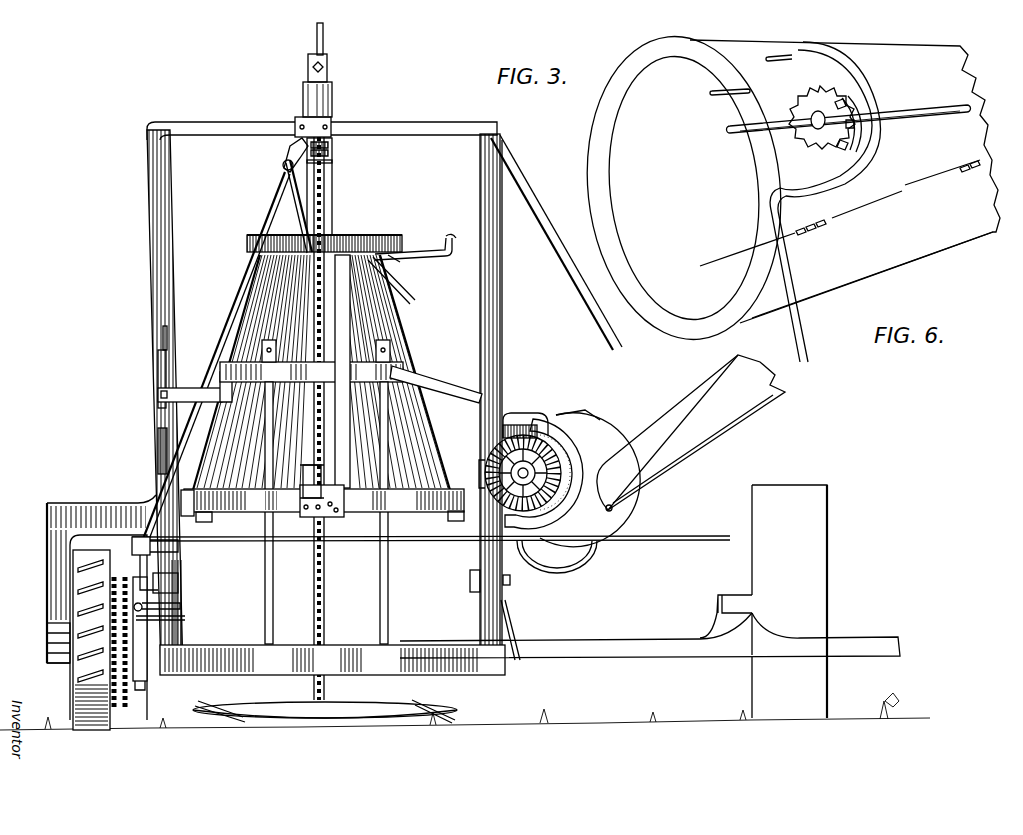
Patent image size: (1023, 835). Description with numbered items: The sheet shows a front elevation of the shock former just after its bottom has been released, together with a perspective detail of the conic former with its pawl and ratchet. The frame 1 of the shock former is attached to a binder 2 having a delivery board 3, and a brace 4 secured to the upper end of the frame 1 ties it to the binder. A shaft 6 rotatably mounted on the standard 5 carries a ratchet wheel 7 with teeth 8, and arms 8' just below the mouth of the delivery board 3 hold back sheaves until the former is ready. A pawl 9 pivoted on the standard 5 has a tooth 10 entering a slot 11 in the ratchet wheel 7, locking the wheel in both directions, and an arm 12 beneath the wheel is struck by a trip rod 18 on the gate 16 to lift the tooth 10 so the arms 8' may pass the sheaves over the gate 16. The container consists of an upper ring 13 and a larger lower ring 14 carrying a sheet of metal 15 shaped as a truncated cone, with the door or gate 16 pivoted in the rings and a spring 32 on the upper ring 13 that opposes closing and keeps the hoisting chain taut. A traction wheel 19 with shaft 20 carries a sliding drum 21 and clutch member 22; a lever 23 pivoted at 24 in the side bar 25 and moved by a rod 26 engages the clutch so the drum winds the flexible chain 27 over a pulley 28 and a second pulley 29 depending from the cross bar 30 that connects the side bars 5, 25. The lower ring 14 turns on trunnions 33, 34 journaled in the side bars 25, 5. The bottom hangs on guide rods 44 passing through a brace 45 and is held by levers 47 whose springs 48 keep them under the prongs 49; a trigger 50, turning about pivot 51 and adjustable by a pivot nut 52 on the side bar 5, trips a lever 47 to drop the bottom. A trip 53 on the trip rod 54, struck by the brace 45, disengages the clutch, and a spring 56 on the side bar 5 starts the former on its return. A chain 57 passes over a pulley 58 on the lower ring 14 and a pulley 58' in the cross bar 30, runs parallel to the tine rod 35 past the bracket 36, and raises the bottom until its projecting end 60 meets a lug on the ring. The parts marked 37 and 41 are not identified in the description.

In FIG. 3, the frame 1 is at (150, 298).
In FIG. 3, the binder 2 is at (752, 503).
In FIG. 3, the delivery board 3 is at (708, 402).
In FIG. 3, the brace 4 is at (574, 291).
In FIG. 3, the standard 5 is at (503, 372).
In FIG. 3, the shaft 6 is at (511, 472).
In FIG. 6, the shaft 6 is at (934, 110).
In FIG. 3, the ratchet wheel 7 is at (560, 475).
In FIG. 3, the teeth 8 is at (590, 476).
In FIG. 6, the teeth 8 is at (808, 117).
In FIG. 3, the arms 8' is at (564, 558).
In FIG. 3, the pawl 9 is at (556, 455).
In FIG. 6, the pawl 9 is at (878, 150).
In FIG. 3, the tooth 10 is at (536, 436).
In FIG. 6, the tooth 10 is at (838, 72).
In FIG. 3, the slot 11 is at (516, 428).
In FIG. 3, the arm 12 is at (508, 624).
In FIG. 6, the arm 12 is at (815, 324).
In FIG. 3, the upper ring 13 is at (309, 241).
In FIG. 3, the lower ring 14 is at (290, 505).
In FIG. 3, the sheet of metal 15 is at (372, 290).
In FIG. 3, the gate 16 is at (400, 302).
In FIG. 6, the gate 16 is at (938, 236).
In FIG. 6, the trip rod 18 is at (720, 98).
In FIG. 3, the traction wheel 19 is at (82, 662).
In FIG. 3, the shaft 20 is at (56, 648).
In FIG. 3, the drum 21 is at (143, 651).
In FIG. 3, the clutch member 22 is at (140, 684).
In FIG. 3, the lever 23 is at (180, 606).
In FIG. 3, the pivot 24 is at (190, 615).
In FIG. 3, the side bar 25 is at (155, 339).
In FIG. 3, the rod 26 is at (358, 542).
In FIG. 3, the flexible chain 27 is at (236, 306).
In FIG. 3, the pulley 28 is at (134, 556).
In FIG. 3, the second pulley 29 is at (280, 176).
In FIG. 3, the cross bar 30 is at (438, 122).
In FIG. 3, the spring 32 is at (388, 256).
In FIG. 3, the trunnion 33 is at (187, 490).
In FIG. 3, the trunnion 34 is at (503, 500).
In FIG. 3, the tine rod 35 is at (316, 40).
In FIG. 3, the bracket 36 is at (332, 95).
In FIG. 3, the collar 37 is at (327, 58).
In FIG. 3, the link 41 is at (430, 269).
In FIG. 3, the guide rods 44 is at (265, 600).
In FIG. 3, the brace 45 is at (291, 362).
In FIG. 3, the levers 47 is at (212, 519).
In FIG. 3, the spring 48 is at (212, 496).
In FIG. 3, the prongs 49 is at (214, 712).
In FIG. 3, the trigger 50 is at (182, 554).
In FIG. 3, the pivot 51 is at (180, 582).
In FIG. 3, the pivot nut 52 is at (510, 580).
In FIG. 3, the trip 53 is at (234, 399).
In FIG. 3, the trip rod 54 is at (158, 372).
In FIG. 3, the spring 56 is at (425, 380).
In FIG. 3, the flexible chain 57 is at (324, 199).
In FIG. 3, the pulley 58 is at (341, 472).
In FIG. 3, the pulley 58' is at (345, 150).
In FIG. 3, the projecting end 60 is at (311, 708).